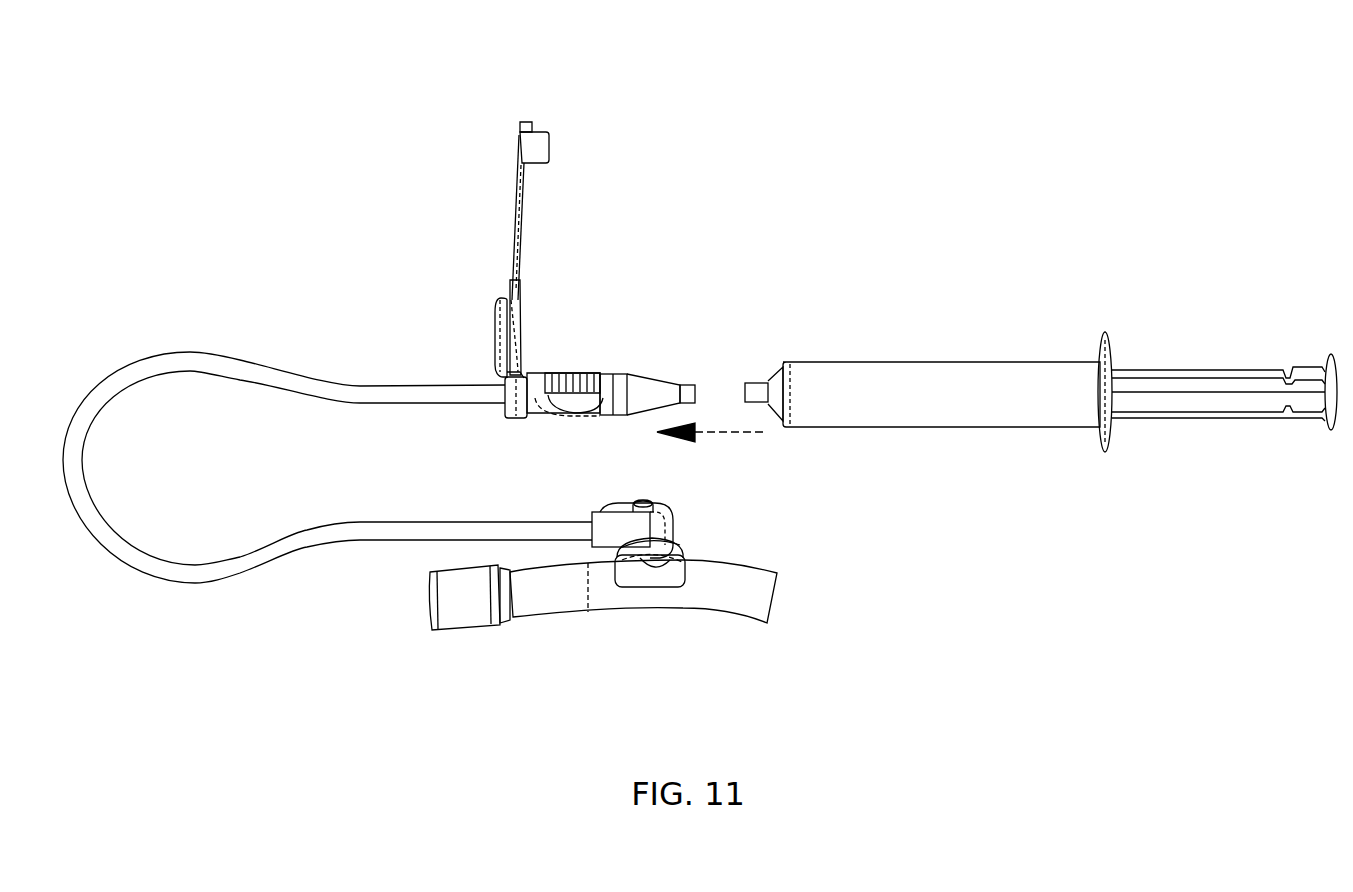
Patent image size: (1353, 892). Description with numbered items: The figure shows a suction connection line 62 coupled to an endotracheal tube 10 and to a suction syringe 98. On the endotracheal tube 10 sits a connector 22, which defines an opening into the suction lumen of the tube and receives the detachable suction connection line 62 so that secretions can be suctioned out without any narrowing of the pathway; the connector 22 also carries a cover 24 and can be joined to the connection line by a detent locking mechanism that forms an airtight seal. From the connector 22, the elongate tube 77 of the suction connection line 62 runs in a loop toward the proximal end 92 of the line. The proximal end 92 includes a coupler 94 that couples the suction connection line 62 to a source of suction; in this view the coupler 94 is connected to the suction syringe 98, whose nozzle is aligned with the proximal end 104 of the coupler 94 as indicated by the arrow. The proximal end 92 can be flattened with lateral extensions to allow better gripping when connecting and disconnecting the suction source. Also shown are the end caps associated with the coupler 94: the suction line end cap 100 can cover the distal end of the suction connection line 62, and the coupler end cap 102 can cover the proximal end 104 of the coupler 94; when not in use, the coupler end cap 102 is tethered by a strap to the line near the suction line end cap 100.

The elongate tube 77 is at (122, 372).
The suction line end cap 100 is at (498, 320).
The coupler end cap 102 is at (533, 138).
The proximal end 92 is at (542, 408).
The coupler 94 is at (641, 384).
The proximal end of the coupler 104 is at (702, 388).
The suction syringe 98 is at (993, 405).
The detachable suction connection line 62 is at (616, 512).
The cover 24 is at (670, 502).
The connector 22 is at (648, 583).
The endotracheal tube 10 is at (750, 605).